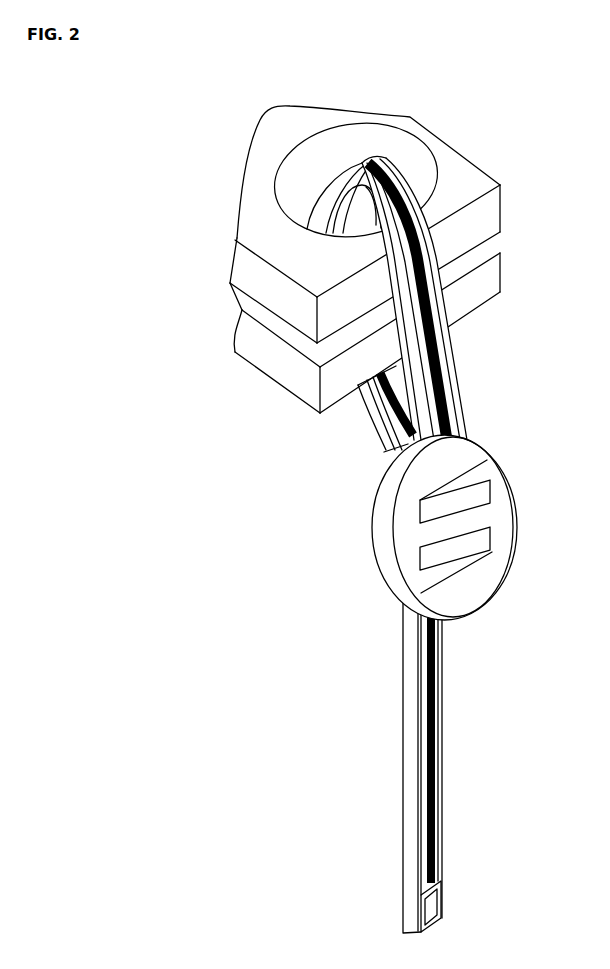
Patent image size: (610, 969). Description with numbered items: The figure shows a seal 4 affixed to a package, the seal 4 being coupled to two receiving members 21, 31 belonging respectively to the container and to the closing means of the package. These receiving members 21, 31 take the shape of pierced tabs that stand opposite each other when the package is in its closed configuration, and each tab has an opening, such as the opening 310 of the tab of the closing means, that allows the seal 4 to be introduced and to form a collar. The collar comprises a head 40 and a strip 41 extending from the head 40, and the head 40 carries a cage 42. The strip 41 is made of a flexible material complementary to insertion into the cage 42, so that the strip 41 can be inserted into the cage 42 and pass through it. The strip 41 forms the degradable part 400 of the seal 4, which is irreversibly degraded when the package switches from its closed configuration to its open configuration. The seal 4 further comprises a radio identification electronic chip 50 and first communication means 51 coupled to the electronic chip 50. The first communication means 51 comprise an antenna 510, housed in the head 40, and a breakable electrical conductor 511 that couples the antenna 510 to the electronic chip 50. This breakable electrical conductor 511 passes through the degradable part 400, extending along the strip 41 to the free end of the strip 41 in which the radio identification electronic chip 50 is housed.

The seal 4 is at (389, 544).
The receiving member 21 is at (500, 280).
The receiving member 31 is at (385, 222).
The opening 310 is at (408, 145).
The head 40 is at (438, 527).
The strip 41 is at (381, 544).
The cage 42 is at (376, 453).
The degradable part 400 is at (458, 361).
The first communication means 51 is at (480, 432).
The antenna 510 is at (490, 498).
The breakable electrical conductor 511 is at (446, 392).
The radio identification electronic chip 50 is at (441, 897).